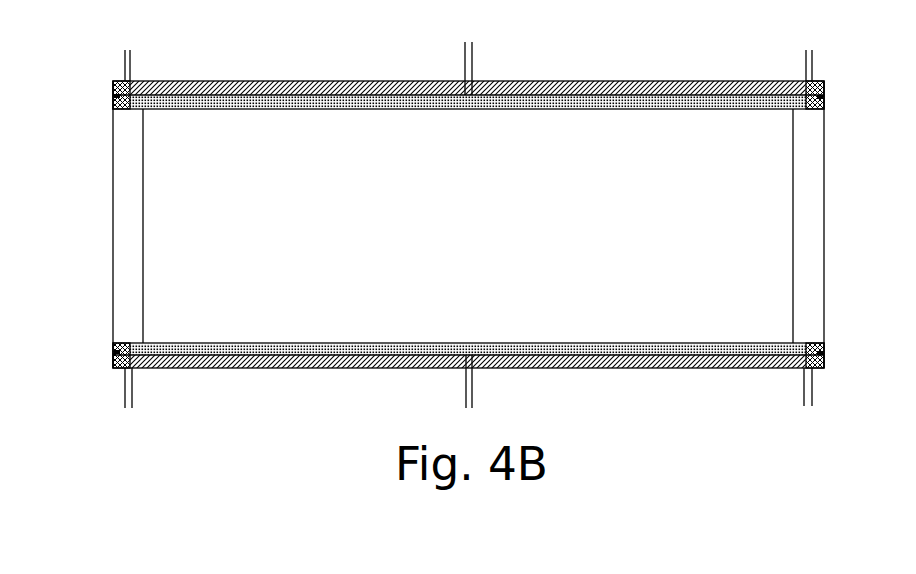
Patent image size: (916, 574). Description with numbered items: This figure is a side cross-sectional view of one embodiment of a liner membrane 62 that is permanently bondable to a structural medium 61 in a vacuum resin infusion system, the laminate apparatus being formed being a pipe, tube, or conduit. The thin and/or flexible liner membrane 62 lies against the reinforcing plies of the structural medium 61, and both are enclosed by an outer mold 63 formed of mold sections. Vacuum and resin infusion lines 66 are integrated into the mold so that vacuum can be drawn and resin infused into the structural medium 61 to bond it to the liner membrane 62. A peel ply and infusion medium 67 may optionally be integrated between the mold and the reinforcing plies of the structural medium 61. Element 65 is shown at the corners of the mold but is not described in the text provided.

The structural medium 61 is at (622, 105).
The liner membrane 62 is at (552, 108).
The outer mold 63 is at (388, 80).
The corner joint 65 is at (117, 96).
The vacuum and resin infusion lines 66 is at (125, 50).
The peel ply and infusion medium 67 is at (698, 107).